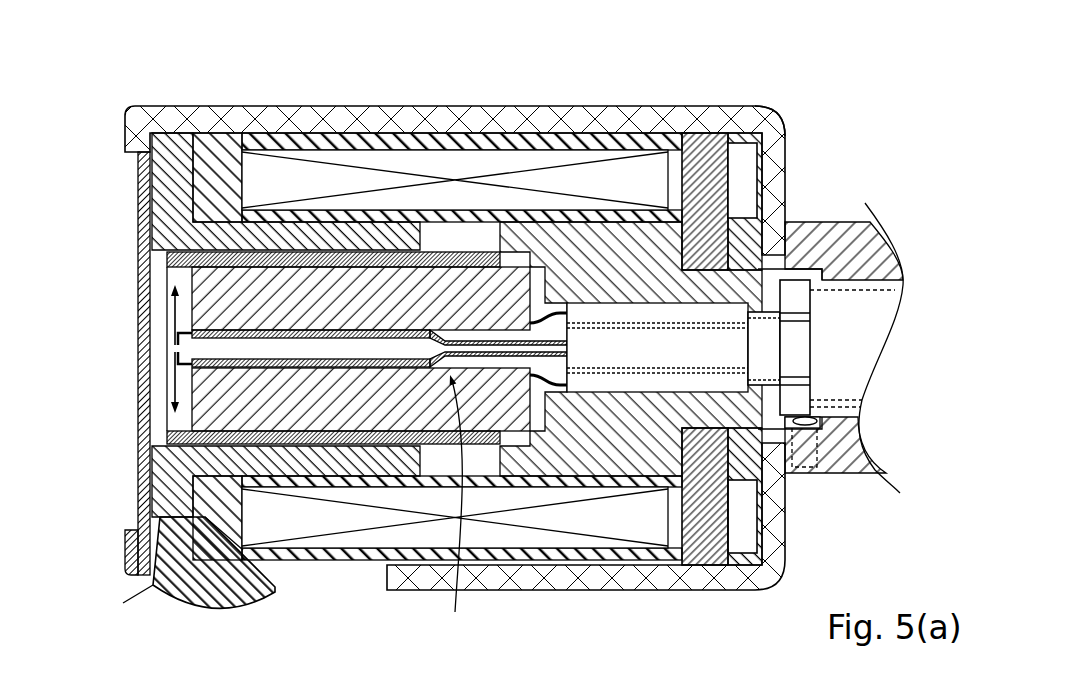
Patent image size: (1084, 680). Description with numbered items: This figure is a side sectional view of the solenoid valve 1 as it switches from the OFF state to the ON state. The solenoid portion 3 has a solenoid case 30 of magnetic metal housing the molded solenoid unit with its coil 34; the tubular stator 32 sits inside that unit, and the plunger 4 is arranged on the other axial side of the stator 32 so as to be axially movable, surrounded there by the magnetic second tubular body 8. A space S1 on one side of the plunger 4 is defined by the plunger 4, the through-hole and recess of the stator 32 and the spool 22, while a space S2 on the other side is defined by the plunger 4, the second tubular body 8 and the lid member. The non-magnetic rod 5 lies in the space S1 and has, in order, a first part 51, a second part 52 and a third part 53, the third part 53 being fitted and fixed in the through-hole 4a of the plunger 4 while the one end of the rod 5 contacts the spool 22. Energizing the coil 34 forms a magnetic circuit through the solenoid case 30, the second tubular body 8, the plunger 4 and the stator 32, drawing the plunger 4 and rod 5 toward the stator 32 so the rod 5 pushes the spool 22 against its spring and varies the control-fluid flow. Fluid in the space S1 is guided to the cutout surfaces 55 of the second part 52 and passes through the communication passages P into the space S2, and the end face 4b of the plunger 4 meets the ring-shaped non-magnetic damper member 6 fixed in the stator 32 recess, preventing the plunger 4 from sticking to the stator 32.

The solenoid valve 1 is at (806, 88).
The solenoid portion 3 is at (173, 90).
The second tubular body 8 is at (163, 488).
The solenoid case 30 is at (512, 91).
The coil 34 is at (293, 170).
The second part 52 is at (661, 431).
The cutout surfaces 55 is at (660, 457).
The through-hole 4a is at (215, 340).
The plunger 4 is at (203, 393).
The end face 4b is at (535, 440).
The damper member 6 is at (547, 300).
The third part 53 is at (487, 332).
The space S2 is at (170, 288).
The communication passages P is at (455, 507).
The rod 5 is at (624, 309).
The first part 51 is at (707, 337).
The space S1 is at (744, 552).
The stator 32 is at (711, 378).
The spool 22 is at (848, 373).